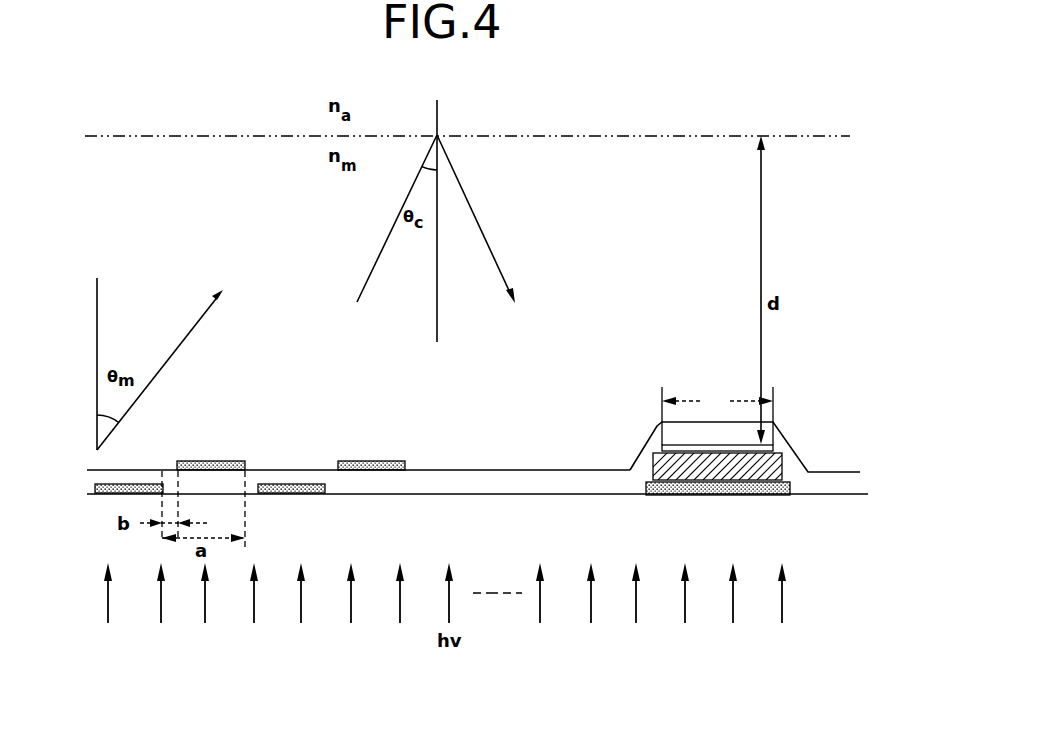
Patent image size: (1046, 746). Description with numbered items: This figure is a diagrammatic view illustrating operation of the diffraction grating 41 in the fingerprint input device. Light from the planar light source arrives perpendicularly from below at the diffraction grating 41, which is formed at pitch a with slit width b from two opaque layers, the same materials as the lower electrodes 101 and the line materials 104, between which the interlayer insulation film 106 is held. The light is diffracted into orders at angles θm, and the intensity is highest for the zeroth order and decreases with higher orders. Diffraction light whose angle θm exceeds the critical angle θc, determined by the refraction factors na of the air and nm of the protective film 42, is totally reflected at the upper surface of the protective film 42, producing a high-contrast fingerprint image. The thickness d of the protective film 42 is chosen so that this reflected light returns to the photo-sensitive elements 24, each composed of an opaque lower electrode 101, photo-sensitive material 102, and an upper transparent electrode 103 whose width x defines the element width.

The photo-sensitive element 24 is at (789, 416).
The diffraction grating 41 is at (287, 450).
The protective film 42 is at (222, 153).
The lower electrode 101 is at (301, 495).
The photo-sensitive material 102 is at (653, 463).
The upper transparent electrode 103 is at (775, 447).
The line material 104 is at (212, 461).
The interlayer insulation film 106 is at (320, 470).